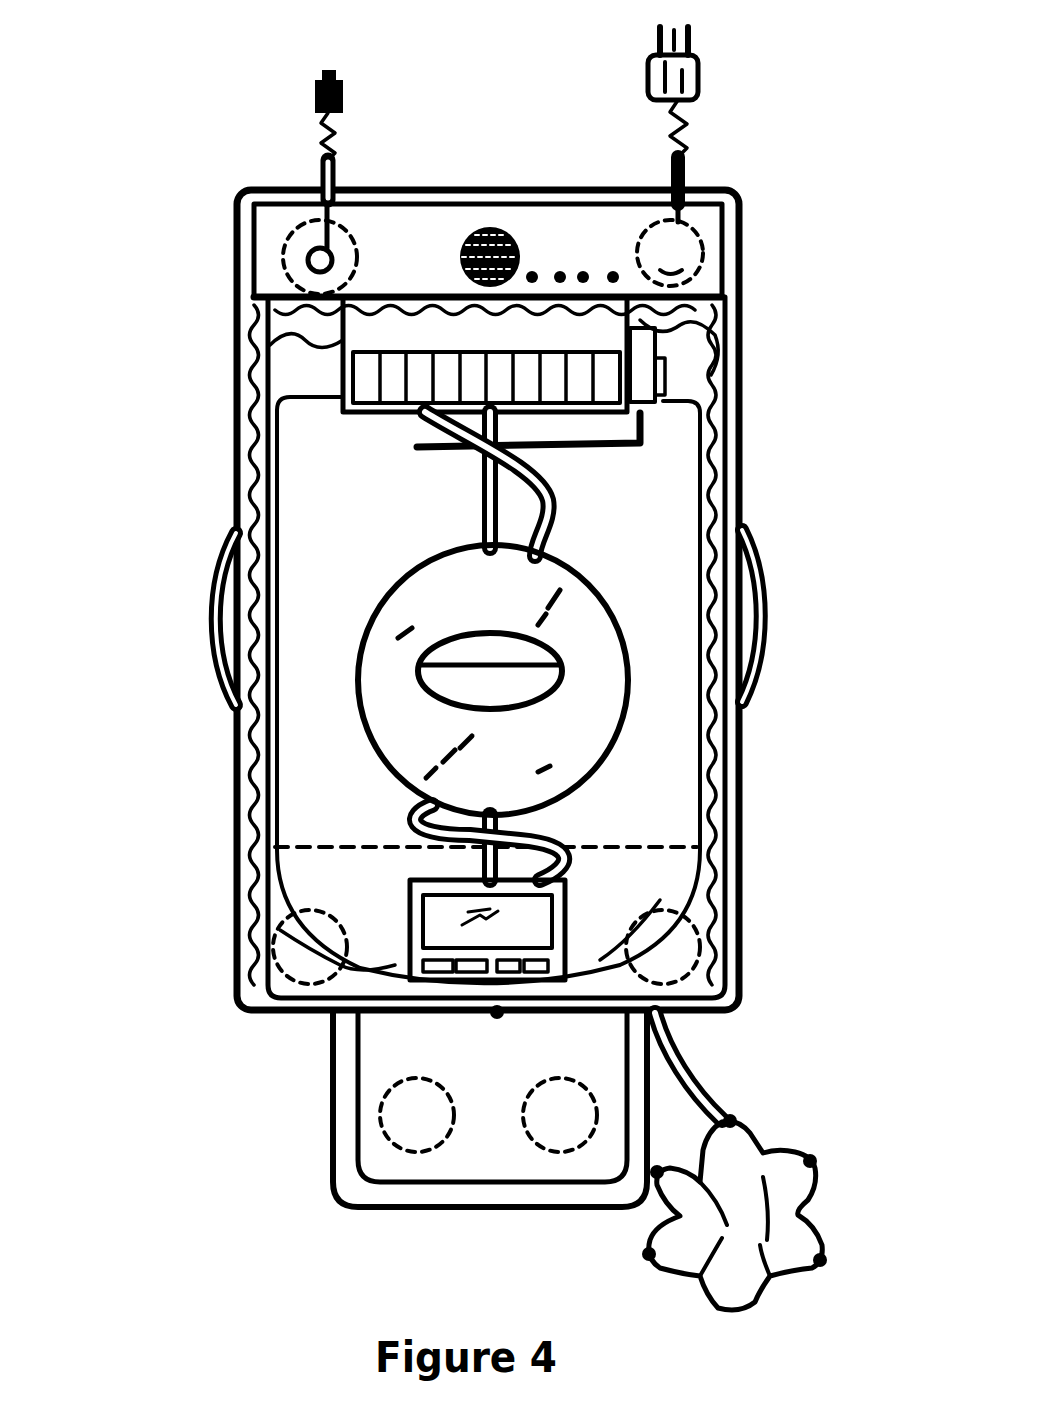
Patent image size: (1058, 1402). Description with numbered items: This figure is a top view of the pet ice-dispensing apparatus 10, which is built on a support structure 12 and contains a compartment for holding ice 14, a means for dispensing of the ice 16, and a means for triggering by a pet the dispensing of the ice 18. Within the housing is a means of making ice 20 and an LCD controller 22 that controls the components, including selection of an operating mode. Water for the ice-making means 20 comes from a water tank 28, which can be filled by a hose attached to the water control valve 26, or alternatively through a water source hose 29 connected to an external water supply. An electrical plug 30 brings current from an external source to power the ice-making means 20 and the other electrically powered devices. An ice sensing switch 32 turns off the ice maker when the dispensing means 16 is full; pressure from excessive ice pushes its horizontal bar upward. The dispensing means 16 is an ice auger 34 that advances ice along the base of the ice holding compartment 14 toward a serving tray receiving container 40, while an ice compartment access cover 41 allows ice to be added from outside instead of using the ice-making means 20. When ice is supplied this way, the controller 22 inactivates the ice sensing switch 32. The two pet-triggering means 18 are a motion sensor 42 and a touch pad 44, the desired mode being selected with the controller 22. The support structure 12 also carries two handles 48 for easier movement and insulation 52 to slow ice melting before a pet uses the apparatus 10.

The apparatus 10 is at (205, 492).
The support structure 12 is at (262, 835).
The compartment for holding ice 14 is at (624, 527).
The means for dispensing of the ice 16 is at (614, 486).
The means for triggering by a pet the dispensing of the ice 18 is at (688, 1066).
The means of making ice 20 is at (398, 333).
The LCD controller 22 is at (520, 928).
The water control valve 26 is at (293, 263).
The water tank 28 is at (420, 265).
The water source hose 29 is at (313, 100).
The electrical plug 30 is at (700, 70).
The ice sensing switch 32 is at (645, 413).
The ice auger 34 is at (547, 500).
The serving tray receiving container 40 is at (477, 1140).
The ice compartment access cover 41 is at (573, 722).
The motion sensor 42 is at (497, 1007).
The touch pad 44 is at (740, 1190).
The handles 48 is at (747, 633).
The insulation 52 is at (385, 1000).